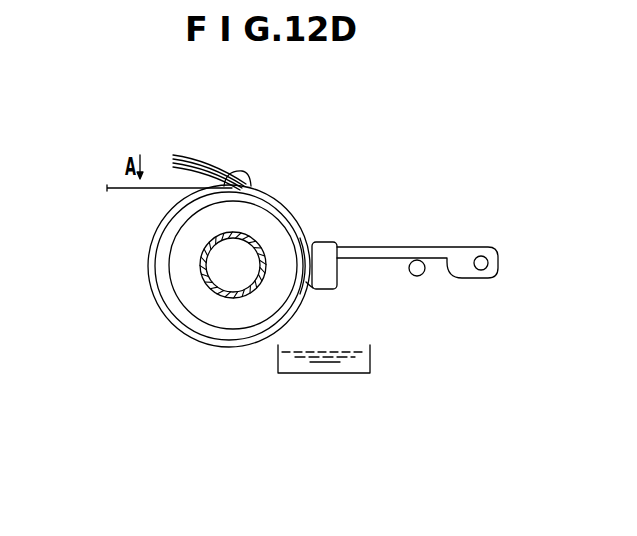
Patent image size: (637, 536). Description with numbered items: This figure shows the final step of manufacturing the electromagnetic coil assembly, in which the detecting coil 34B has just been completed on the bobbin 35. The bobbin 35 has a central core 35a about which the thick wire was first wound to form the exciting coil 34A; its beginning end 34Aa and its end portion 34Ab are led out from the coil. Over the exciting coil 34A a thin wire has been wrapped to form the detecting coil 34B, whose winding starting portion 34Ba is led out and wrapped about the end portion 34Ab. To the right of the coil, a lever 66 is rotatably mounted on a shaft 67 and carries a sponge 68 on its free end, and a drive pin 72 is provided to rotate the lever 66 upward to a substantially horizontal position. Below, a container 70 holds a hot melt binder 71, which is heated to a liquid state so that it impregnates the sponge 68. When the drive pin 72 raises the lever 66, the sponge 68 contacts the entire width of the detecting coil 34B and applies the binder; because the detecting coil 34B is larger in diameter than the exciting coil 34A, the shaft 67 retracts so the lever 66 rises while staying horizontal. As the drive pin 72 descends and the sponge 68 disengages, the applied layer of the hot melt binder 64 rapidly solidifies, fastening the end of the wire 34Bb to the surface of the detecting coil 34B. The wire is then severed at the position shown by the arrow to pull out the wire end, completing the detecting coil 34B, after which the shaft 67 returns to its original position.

The exciting coil 34A is at (199, 302).
The beginning end 34Aa is at (190, 166).
The end portion of the wire 34Ab is at (228, 170).
The detecting coil 34B is at (165, 268).
The winding starting portion of the wire 34Ba is at (243, 172).
The end of the wire 34Bb is at (303, 227).
The bobbin 35 is at (279, 201).
The core 35a is at (220, 297).
The applied layer of the hot melt binder 64 is at (310, 290).
The lever 66 is at (393, 250).
The shaft 67 is at (481, 256).
The sponge 68 is at (329, 250).
The container 70 is at (370, 356).
The hot melt binder 71 is at (356, 365).
The drive pin 72 is at (418, 260).